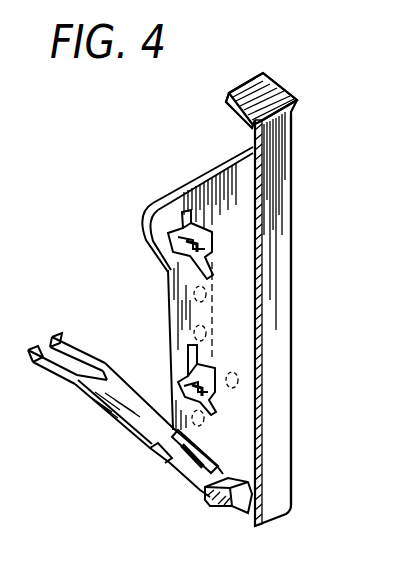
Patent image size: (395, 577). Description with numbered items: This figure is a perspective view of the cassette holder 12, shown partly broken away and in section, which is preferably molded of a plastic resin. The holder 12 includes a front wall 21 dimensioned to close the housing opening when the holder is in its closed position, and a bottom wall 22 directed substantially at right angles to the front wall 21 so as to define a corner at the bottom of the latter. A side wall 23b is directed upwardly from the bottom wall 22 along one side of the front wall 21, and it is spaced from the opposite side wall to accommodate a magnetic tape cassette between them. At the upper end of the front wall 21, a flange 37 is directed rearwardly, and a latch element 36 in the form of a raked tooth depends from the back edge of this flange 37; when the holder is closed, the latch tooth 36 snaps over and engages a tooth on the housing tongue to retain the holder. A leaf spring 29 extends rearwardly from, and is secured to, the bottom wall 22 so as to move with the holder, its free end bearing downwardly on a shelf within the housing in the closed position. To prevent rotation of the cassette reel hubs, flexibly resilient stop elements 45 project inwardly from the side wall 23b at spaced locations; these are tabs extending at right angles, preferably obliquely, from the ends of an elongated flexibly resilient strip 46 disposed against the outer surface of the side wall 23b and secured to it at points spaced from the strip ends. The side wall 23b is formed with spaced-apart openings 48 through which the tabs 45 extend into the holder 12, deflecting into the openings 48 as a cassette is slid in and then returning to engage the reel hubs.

The holder 12 is at (302, 230).
The front wall 21 is at (285, 327).
The bottom wall 22 is at (240, 510).
The side wall 23b is at (223, 189).
The leaf spring 29 is at (130, 413).
The latch element (latch tooth) 36 is at (232, 107).
The flange 37 is at (262, 84).
The stop element (tab) 45 is at (170, 241).
The strip 46 is at (194, 356).
The openings 48 is at (188, 228).